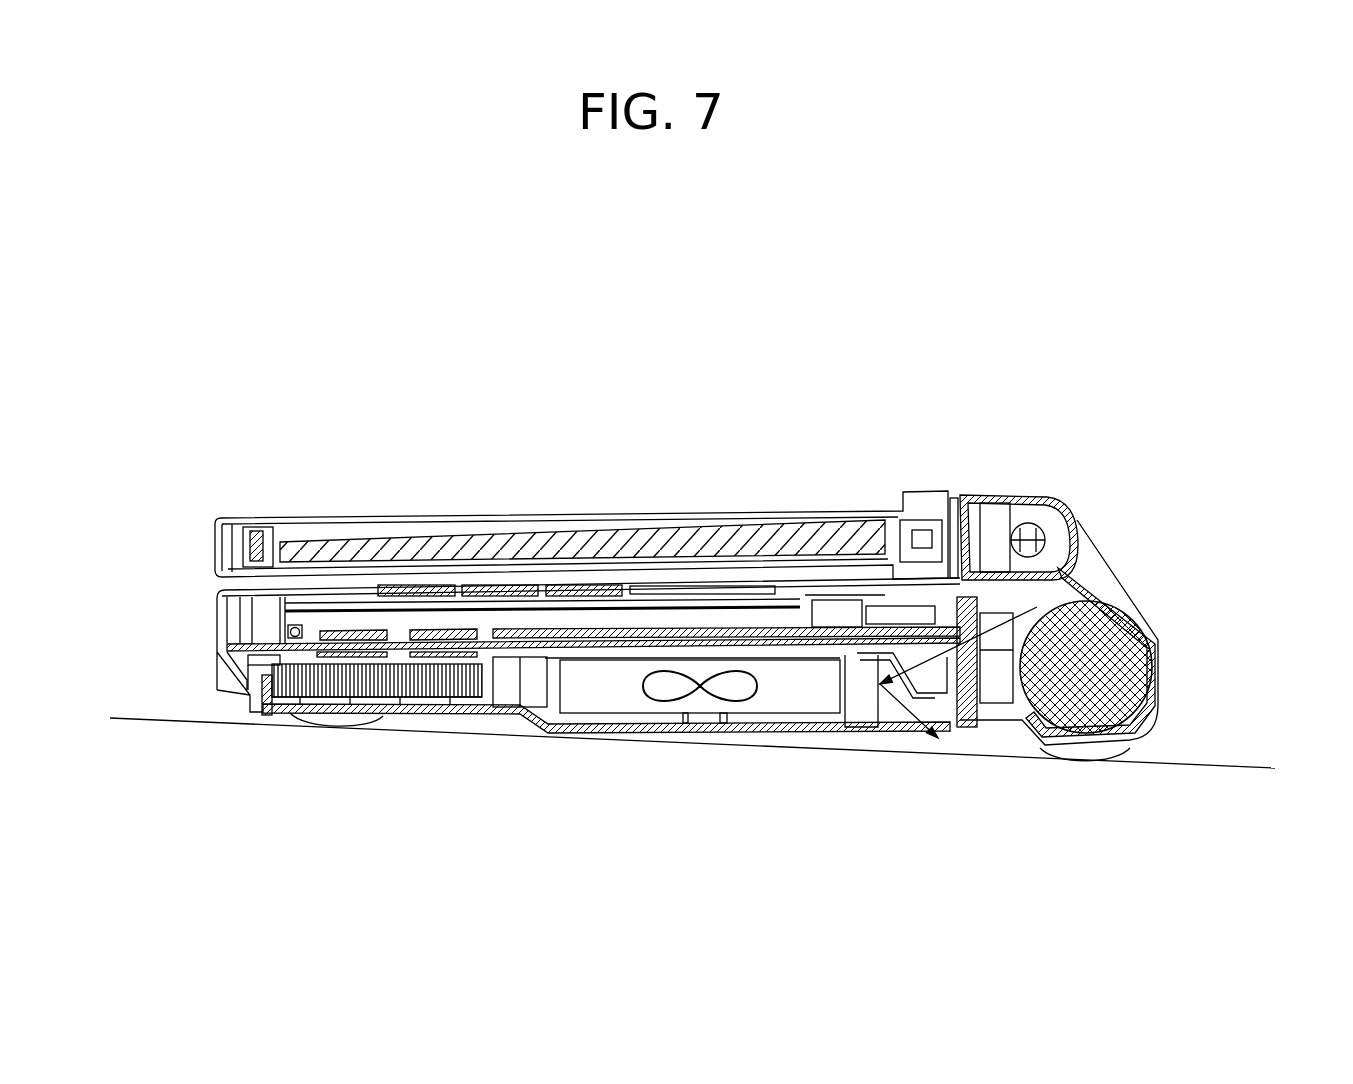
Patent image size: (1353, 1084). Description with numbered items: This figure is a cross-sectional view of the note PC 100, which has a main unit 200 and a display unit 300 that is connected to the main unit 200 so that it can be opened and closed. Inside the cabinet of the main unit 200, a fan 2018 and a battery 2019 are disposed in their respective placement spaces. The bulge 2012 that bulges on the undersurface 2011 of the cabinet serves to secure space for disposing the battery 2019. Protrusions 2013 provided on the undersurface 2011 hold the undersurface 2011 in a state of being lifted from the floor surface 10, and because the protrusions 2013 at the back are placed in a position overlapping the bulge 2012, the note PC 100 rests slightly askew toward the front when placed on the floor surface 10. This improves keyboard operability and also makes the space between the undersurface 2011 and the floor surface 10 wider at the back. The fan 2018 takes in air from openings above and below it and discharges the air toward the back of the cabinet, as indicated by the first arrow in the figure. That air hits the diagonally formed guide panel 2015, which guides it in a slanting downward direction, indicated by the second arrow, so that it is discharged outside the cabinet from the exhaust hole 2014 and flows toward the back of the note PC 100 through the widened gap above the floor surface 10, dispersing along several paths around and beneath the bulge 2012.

The floor surface 10 is at (1247, 762).
The note PC 100 is at (927, 425).
The main unit 200 is at (208, 656).
The display unit 300 is at (420, 505).
The undersurface 2011 is at (797, 750).
The bulge 2012 is at (1128, 768).
The protrusions 2013 is at (365, 735).
The exhaust hole 2014 is at (933, 756).
The guide panel 2015 is at (962, 672).
The fan 2018 is at (628, 687).
The battery 2019 is at (1120, 632).